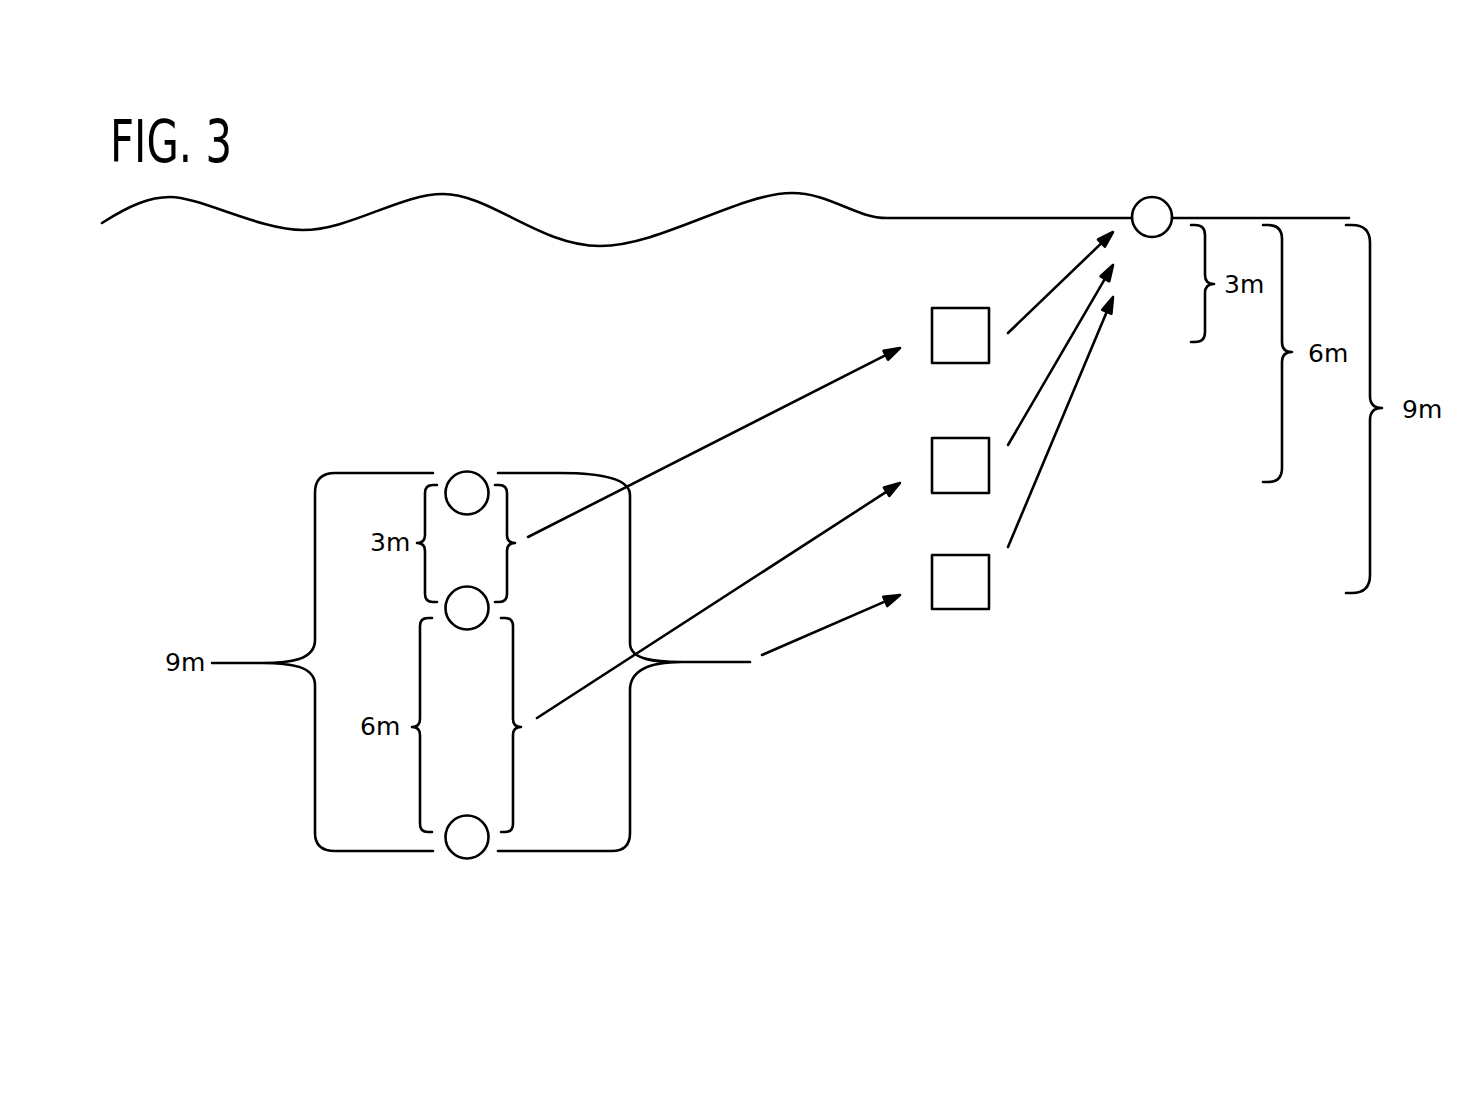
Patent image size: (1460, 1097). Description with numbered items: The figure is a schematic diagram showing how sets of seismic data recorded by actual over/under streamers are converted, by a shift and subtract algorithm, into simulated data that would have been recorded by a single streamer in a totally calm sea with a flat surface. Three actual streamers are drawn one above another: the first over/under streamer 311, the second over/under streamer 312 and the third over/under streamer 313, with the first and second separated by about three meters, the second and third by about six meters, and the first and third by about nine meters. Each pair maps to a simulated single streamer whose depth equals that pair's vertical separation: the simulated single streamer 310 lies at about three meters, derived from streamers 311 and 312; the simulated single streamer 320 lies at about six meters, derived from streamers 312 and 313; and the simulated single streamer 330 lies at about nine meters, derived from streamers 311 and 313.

The simulated single streamer 310 is at (962, 308).
The simulated single streamer 320 is at (967, 438).
The simulated single streamer 330 is at (967, 555).
The first over/under streamer 311 is at (463, 471).
The second over/under streamer 312 is at (467, 630).
The third over/under streamer 313 is at (467, 859).